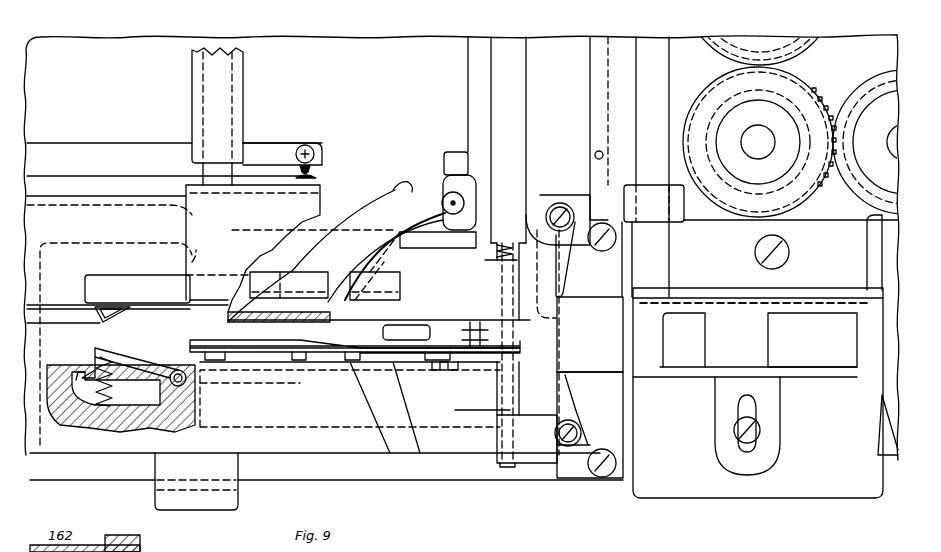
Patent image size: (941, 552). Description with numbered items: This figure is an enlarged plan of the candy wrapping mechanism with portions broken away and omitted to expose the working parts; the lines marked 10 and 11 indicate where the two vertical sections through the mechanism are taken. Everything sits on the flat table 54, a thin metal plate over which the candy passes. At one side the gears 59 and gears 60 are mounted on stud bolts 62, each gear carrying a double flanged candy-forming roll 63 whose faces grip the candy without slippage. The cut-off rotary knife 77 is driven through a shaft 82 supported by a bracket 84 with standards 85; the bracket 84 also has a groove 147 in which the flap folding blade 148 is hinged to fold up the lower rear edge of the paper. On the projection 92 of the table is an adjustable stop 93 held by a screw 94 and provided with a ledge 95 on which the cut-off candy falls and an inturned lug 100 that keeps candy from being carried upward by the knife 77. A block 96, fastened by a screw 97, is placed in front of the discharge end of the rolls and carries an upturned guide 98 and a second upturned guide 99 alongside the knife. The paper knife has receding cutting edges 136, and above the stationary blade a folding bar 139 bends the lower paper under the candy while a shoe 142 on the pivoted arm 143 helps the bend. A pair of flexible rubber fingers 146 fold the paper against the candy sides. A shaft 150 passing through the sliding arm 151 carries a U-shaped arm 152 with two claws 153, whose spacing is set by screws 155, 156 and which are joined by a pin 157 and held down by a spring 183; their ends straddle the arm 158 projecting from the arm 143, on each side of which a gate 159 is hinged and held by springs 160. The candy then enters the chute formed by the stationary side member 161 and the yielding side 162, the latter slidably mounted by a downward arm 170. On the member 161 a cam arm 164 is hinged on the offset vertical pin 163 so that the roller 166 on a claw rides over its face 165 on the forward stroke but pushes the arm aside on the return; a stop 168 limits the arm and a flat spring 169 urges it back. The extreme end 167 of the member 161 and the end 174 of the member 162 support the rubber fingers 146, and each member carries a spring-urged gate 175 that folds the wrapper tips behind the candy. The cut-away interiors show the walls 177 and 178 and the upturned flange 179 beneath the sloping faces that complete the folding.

The section line 10— 10 is at (903, 333).
The section line 11— 11 is at (455, 498).
The flat table 54 is at (205, 102).
The gears 59 is at (858, 50).
The gears 60 is at (716, 82).
The stud bolt 62 is at (758, 142).
The double flanged candy-forming roll 63 is at (816, 94).
The rotary knife 77 is at (828, 303).
The shaft 82 is at (645, 167).
The bracket 84 is at (590, 82).
The standards 85 is at (654, 203).
The projection of the table 92 is at (758, 393).
The adjustable stop 93 is at (817, 382).
The screw 94 is at (760, 437).
The ledge 95 is at (812, 340).
The block 96 is at (816, 215).
The screw 97 is at (790, 252).
The upturned guide 98 is at (870, 253).
The second upturned guide 99 is at (706, 292).
The inturned lug 100 is at (684, 340).
The cutting edges 136 is at (870, 275).
The stationary folding bar 139 is at (590, 425).
The shoe 142 is at (590, 334).
The arm 143 is at (538, 470).
The flexible rubber fingers 146 is at (556, 338).
The groove 147 is at (611, 108).
The flap folding blade 148 is at (567, 140).
The shaft 150 is at (203, 125).
The arm 151 is at (282, 154).
The U-shaped arm 152 is at (290, 248).
The claws 153 is at (486, 320).
The screw 155 is at (222, 356).
The screw 156 is at (450, 371).
The pin 157 is at (480, 368).
The arm 158 is at (406, 332).
The gate 159 is at (503, 284).
The springs 160 is at (508, 243).
The stationary side member 161 is at (116, 335).
The yielding side 162 is at (121, 410).
The pin 163 is at (464, 200).
The cam arm 164 is at (386, 257).
The face 165 is at (137, 298).
The roller 166 is at (400, 292).
The extreme end 167 is at (546, 203).
The stop 168 is at (408, 248).
The flat spring 169 is at (406, 182).
The arm 170 is at (196, 481).
The end 174 is at (582, 434).
The spring-urged gate 175 is at (108, 313).
The wall 177 is at (283, 426).
The wall 178 is at (322, 232).
The upturned flange 179 is at (285, 372).
The spring 183 is at (314, 152).